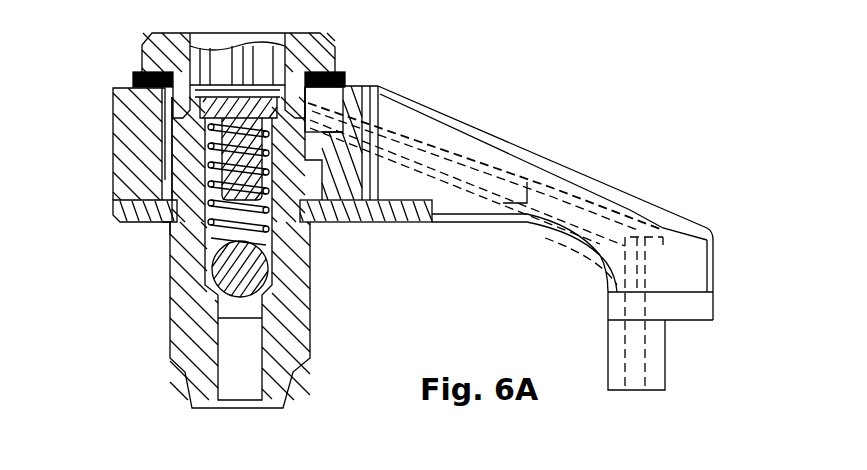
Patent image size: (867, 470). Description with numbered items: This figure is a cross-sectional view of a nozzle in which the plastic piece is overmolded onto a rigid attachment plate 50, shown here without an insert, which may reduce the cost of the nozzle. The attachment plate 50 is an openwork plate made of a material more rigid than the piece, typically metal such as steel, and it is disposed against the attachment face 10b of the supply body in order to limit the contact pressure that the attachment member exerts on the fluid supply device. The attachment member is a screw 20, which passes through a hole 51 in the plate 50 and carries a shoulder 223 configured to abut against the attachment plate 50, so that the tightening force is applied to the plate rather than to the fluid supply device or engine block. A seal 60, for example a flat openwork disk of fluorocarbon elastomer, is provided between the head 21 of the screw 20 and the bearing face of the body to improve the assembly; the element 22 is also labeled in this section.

The screw 20 is at (160, 337).
The head 21 is at (334, 47).
The valve housing 22 is at (173, 297).
The shoulder 223 is at (165, 178).
The attachment plate 50 is at (138, 211).
The hole 51 is at (165, 233).
The seal 60 is at (133, 80).
The attachment face 10b is at (384, 212).